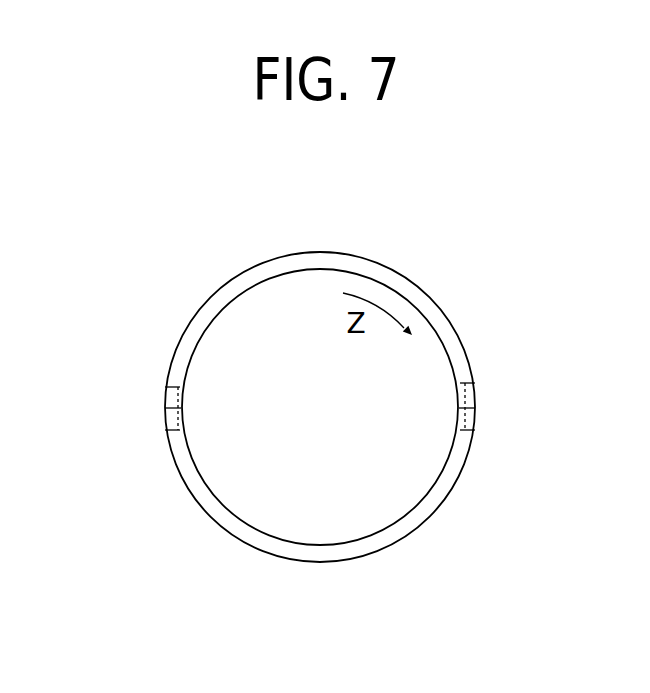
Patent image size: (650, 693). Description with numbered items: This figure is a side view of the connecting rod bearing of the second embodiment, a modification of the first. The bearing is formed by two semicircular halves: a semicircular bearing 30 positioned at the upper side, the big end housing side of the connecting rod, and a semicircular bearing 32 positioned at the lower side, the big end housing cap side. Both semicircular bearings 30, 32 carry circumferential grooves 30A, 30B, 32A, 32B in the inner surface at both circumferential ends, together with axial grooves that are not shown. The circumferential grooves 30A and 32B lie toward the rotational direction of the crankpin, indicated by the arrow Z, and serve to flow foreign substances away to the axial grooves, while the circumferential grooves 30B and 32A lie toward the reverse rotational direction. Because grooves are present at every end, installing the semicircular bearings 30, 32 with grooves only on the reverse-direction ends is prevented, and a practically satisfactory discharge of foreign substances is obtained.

The semicircular bearing 30 is at (349, 253).
The semicircular bearing 32 is at (342, 545).
The circumferential groove 30A is at (475, 383).
The circumferential groove 30B is at (167, 387).
The circumferential groove 32A is at (475, 430).
The circumferential groove 32B is at (167, 430).